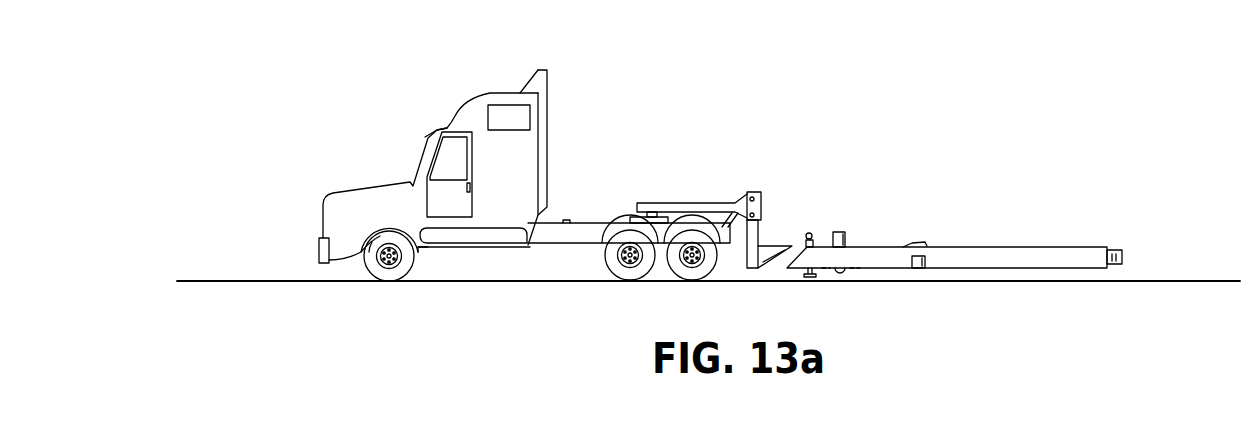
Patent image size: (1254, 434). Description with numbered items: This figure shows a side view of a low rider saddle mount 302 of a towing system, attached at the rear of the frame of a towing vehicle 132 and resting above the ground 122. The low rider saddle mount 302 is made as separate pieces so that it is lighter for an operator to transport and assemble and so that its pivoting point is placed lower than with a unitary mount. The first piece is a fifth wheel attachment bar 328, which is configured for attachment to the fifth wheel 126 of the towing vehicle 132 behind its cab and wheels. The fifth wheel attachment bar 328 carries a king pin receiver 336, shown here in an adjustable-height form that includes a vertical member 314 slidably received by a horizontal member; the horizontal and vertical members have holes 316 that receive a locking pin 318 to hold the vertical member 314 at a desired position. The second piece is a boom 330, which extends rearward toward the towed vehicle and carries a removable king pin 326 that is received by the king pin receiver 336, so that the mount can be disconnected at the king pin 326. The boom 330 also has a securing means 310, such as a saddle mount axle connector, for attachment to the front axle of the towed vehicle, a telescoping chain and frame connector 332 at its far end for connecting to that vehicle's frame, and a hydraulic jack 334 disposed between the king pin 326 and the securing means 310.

The ground surface 122 is at (344, 318).
The fifth wheel 126 is at (628, 217).
The towing vehicle 132 is at (465, 103).
The low rider saddle mount 302 is at (831, 197).
The securing means 310 is at (913, 245).
The vertical member 314 is at (747, 245).
The holes 316 is at (717, 158).
The locking pin 318 is at (750, 193).
The king pin 326 is at (813, 233).
The fifth wheel attachment bar 328 is at (673, 203).
The boom 330 is at (1008, 248).
The telescoping chain and frame connector 332 is at (1112, 250).
The hydraulic jack 334 is at (845, 246).
The king pin receiver 336 is at (772, 246).